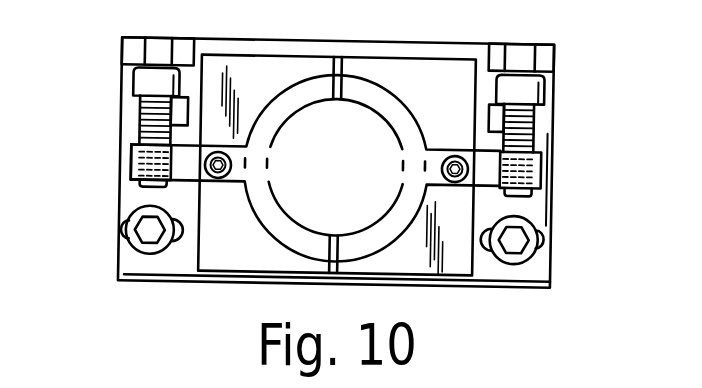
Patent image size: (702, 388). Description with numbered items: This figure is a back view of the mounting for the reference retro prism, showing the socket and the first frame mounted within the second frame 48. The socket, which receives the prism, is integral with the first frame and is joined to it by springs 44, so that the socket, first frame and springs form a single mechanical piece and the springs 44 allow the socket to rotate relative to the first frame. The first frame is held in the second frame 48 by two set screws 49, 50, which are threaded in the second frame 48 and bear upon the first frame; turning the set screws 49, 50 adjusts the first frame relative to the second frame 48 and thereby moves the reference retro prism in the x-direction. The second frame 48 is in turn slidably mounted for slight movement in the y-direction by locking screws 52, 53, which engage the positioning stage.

The springs 44 is at (343, 88).
The second frame 48 is at (105, 182).
The set screw 49 is at (126, 112).
The set screw 50 is at (534, 121).
The locking screw 52 is at (127, 226).
The locking screw 53 is at (540, 224).